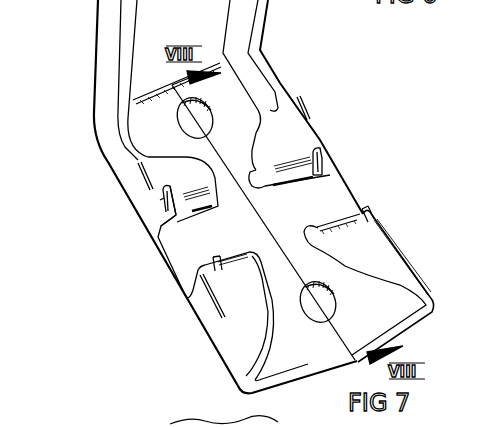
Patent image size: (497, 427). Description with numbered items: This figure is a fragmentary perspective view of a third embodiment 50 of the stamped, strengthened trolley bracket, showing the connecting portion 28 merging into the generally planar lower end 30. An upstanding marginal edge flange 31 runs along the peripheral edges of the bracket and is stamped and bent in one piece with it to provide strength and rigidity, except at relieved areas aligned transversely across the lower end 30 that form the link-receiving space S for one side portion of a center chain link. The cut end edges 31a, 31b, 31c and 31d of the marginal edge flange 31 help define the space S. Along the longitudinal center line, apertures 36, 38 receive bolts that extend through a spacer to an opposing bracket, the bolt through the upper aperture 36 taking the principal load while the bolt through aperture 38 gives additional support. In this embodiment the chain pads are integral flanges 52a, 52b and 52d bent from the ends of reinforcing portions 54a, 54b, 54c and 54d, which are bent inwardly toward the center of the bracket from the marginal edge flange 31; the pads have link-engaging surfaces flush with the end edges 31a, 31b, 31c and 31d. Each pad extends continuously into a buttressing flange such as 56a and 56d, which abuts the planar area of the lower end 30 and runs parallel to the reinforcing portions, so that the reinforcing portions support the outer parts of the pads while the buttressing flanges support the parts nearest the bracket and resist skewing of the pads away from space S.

The connecting portion 28 is at (180, 35).
The lower end 30 is at (240, 111).
The marginal edge flange 31 is at (108, 37).
The end edge 31a is at (327, 165).
The end edge 31b is at (160, 217).
The end edge 31c is at (195, 270).
The end edge 31d is at (368, 214).
The aperture 36 is at (182, 115).
The aperture 38 is at (318, 310).
The bracket embodiment 50 is at (310, 90).
The chain pad flange 52a is at (320, 180).
The chain pad flange 52b is at (200, 212).
The chain pad flange 52d is at (305, 232).
The reinforcing portion 54a is at (295, 132).
The reinforcing portion 54b is at (177, 172).
The reinforcing portion 54c is at (243, 293).
The reinforcing portion 54d is at (385, 252).
The buttressing flange 56a is at (255, 187).
The buttressing flange 56d is at (330, 288).
The link-receiving space S is at (362, 192).